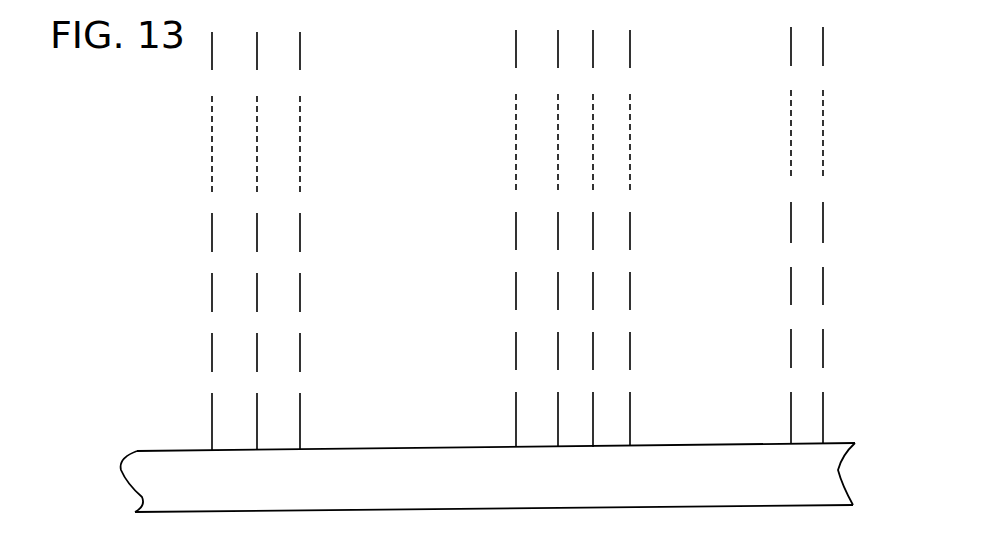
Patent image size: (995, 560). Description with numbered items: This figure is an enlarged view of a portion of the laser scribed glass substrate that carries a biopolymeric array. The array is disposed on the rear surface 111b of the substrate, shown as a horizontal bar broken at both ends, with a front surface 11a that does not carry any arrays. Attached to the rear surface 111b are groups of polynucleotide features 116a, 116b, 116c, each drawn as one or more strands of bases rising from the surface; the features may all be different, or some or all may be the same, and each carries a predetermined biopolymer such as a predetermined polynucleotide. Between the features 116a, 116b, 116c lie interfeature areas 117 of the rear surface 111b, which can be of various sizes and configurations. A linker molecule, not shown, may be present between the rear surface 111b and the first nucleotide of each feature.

The substrate 11a is at (462, 456).
The rear surface 111b is at (162, 450).
The interfeature areas 117 is at (437, 448).
The feature 116a is at (307, 462).
The feature 116b is at (515, 461).
The feature 116c is at (834, 455).